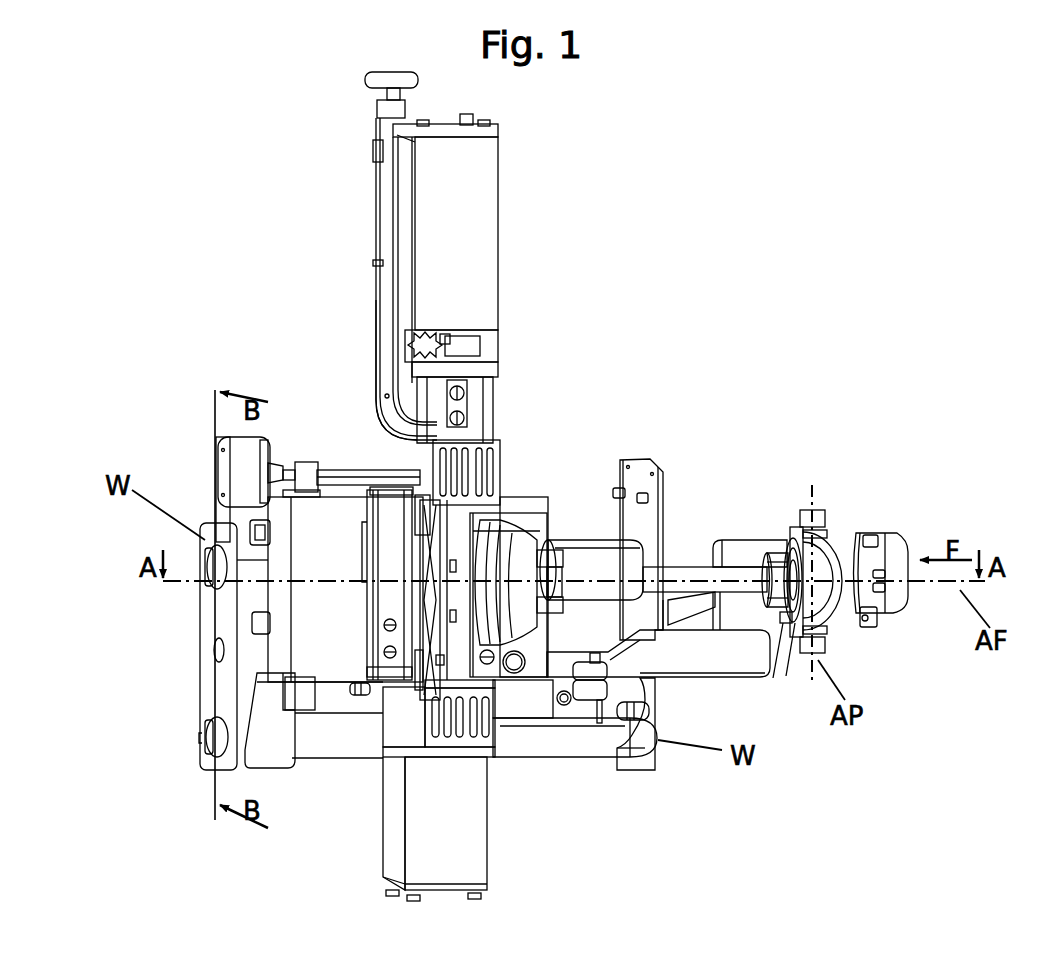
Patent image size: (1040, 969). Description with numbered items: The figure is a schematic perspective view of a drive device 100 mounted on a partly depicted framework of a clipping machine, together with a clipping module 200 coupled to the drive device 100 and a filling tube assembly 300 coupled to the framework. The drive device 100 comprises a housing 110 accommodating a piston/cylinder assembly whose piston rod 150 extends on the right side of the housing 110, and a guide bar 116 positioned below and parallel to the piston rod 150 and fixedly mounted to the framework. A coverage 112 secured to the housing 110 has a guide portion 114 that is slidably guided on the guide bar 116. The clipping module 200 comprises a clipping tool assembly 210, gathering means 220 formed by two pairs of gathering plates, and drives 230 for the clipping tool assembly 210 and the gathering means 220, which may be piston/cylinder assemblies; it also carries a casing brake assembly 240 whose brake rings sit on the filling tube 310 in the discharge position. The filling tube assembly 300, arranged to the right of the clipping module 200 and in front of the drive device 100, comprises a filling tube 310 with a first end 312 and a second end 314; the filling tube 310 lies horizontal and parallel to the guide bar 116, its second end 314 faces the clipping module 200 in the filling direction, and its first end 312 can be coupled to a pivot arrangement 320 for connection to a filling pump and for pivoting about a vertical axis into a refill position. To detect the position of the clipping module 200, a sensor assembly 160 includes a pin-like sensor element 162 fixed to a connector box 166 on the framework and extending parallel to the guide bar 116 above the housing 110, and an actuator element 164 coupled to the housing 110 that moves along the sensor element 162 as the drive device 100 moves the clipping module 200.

The drive device 100 is at (108, 362).
The housing 110 is at (310, 648).
The coverage 112 is at (268, 593).
The guide portion 114 is at (270, 730).
The guide bar 116 is at (547, 752).
The piston rod 150 is at (579, 552).
The sensor assembly 160 is at (219, 286).
The sensor element 162 is at (336, 458).
The actuator element 164 is at (305, 468).
The connector box 166 is at (252, 460).
The clipping module 200 is at (594, 326).
The clipping tool assembly 210 is at (432, 652).
The gathering means 220 is at (385, 455).
The drives 230 is at (572, 210).
The casing brake assembly 240 is at (526, 520).
The filling tube assembly 300 is at (838, 434).
The filling tube 310 is at (665, 574).
The first end 312 is at (758, 573).
The second end 314 is at (570, 578).
The pivot arrangement 320 is at (847, 550).